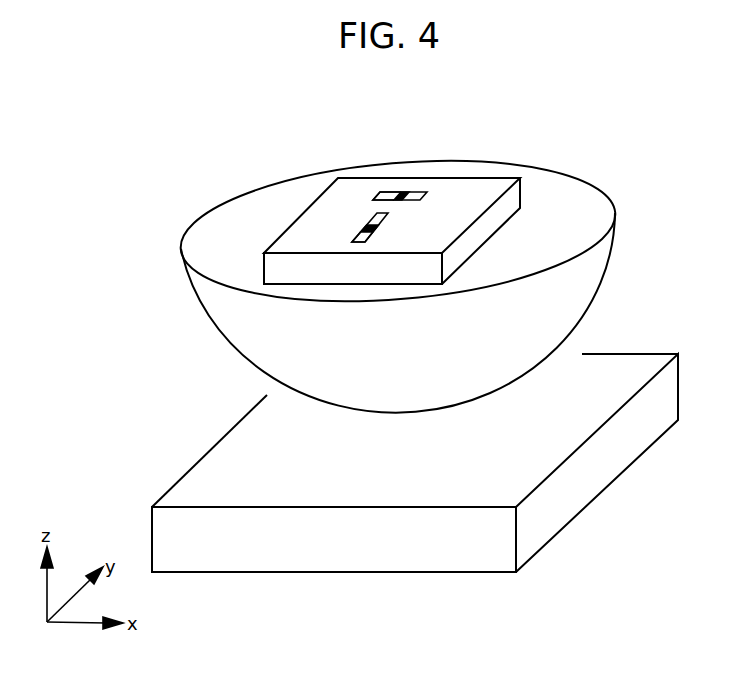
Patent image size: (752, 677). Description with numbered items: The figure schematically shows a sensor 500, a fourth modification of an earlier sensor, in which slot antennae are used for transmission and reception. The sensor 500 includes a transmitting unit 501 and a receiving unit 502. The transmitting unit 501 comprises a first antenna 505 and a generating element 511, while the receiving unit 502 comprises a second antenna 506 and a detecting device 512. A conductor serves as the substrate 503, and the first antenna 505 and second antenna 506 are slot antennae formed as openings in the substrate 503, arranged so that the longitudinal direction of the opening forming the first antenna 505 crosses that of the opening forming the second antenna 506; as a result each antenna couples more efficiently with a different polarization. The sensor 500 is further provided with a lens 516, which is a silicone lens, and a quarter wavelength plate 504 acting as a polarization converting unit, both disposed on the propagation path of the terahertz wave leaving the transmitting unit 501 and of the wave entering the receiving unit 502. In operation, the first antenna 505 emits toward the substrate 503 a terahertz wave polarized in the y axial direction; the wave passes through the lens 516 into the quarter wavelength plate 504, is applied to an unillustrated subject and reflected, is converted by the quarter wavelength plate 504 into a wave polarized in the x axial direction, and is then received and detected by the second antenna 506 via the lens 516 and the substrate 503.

The sensor 500 is at (418, 630).
The transmitting unit 501 is at (410, 158).
The receiving unit 502 is at (282, 196).
The substrate 503 is at (502, 208).
The quarter wavelength plate 504 is at (602, 462).
The first antenna 505 is at (373, 198).
The second antenna 506 is at (352, 240).
The generating element 511 is at (400, 195).
The detecting device 512 is at (397, 238).
The lens 516 is at (590, 291).